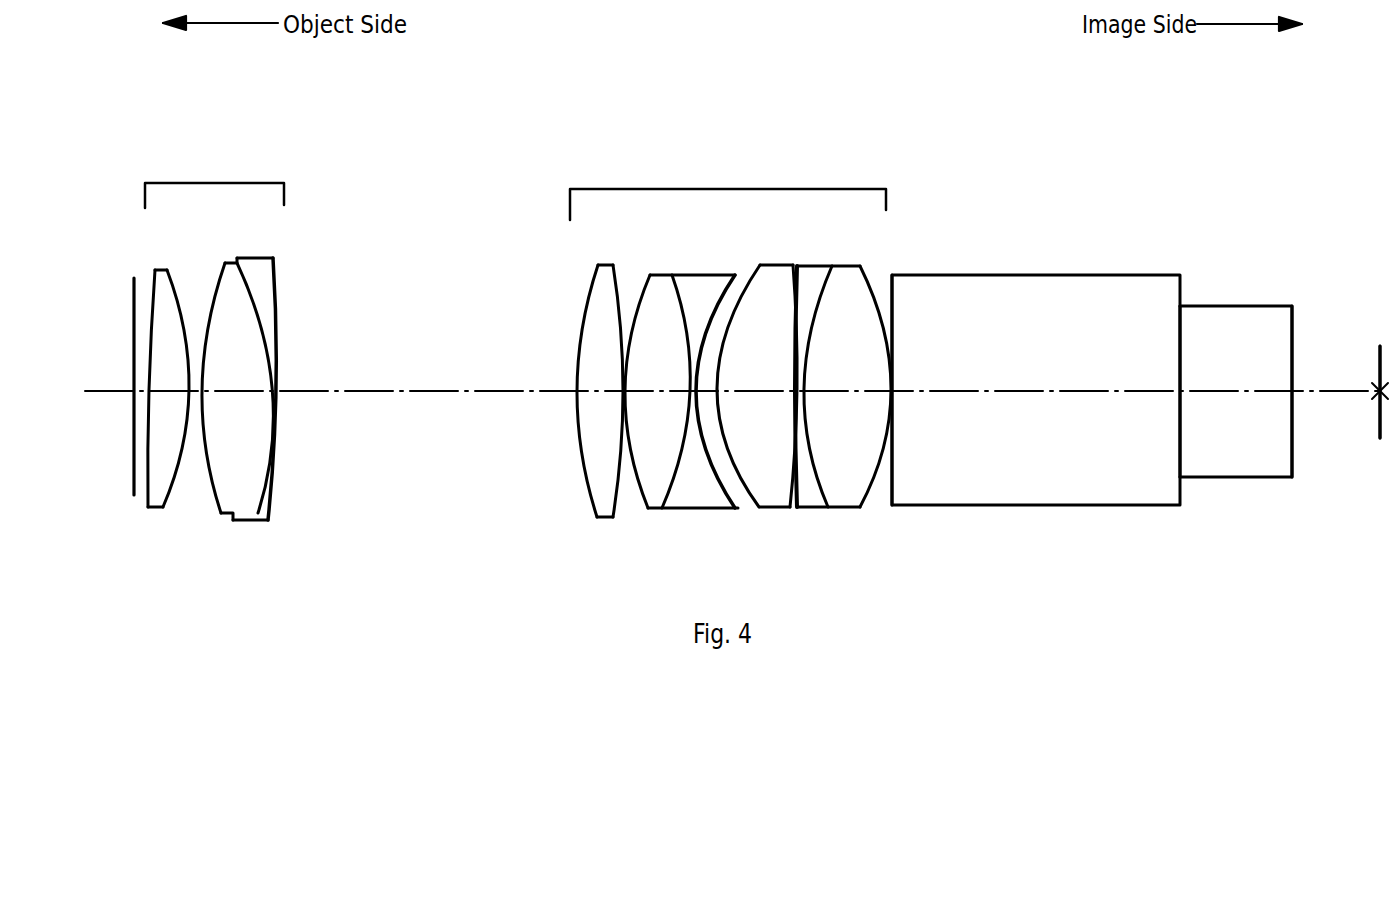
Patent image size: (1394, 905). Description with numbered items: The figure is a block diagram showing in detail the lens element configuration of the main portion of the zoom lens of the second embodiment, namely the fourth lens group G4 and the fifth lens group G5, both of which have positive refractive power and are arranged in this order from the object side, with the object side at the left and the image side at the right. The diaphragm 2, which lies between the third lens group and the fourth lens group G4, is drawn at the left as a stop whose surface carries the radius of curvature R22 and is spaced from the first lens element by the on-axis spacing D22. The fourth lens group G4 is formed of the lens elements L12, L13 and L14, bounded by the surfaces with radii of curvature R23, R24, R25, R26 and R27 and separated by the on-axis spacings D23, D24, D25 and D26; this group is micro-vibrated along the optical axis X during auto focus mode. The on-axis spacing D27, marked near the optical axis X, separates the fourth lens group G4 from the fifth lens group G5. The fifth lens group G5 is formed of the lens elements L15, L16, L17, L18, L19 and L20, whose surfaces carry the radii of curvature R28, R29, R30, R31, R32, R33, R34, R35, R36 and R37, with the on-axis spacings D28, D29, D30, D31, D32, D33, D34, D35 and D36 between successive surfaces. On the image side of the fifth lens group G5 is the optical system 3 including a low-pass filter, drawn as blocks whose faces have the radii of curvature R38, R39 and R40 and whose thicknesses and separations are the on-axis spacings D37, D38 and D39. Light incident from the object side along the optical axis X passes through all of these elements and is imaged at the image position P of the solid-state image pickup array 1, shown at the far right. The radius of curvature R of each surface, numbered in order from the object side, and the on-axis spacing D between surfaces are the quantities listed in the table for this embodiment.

The fourth lens group G4 is at (214, 179).
The fifth lens group G5 is at (728, 190).
The diaphragm 2 is at (106, 383).
The optical system 3 is at (1111, 396).
The solid-state image pickup array 1 is at (1378, 362).
The image position P is at (1376, 400).
The optical axis X is at (442, 393).
The lens element L12 is at (147, 394).
The lens element L13 is at (268, 395).
The lens element L14 is at (294, 413).
The lens element L15 is at (573, 398).
The lens element L16 is at (672, 387).
The lens element L17 is at (711, 402).
The lens element L18 is at (763, 387).
The lens element L19 is at (836, 387).
The lens element L20 is at (893, 395).
The radius of curvature R22 is at (132, 293).
The radius of curvature R23 is at (150, 292).
The radius of curvature R24 is at (172, 275).
The radius of curvature R25 is at (212, 280).
The radius of curvature R26 is at (247, 277).
The radius of curvature R27 is at (277, 310).
The radius of curvature R28 is at (585, 315).
The radius of curvature R29 is at (613, 267).
The radius of curvature R30 is at (638, 293).
The radius of curvature R31 is at (675, 275).
The radius of curvature R32 is at (720, 320).
The radius of curvature R33 is at (747, 273).
The radius of curvature R34 is at (773, 278).
The radius of curvature R35 is at (800, 283).
The radius of curvature R36 is at (823, 282).
The radius of curvature R37 is at (882, 288).
The radius of curvature R38 is at (884, 286).
The radius of curvature R39 is at (1182, 330).
The radius of curvature R40 is at (1292, 333).
The on-axis spacing D22 is at (158, 392).
The on-axis spacing D23 is at (180, 391).
The on-axis spacing D24 is at (190, 400).
The on-axis spacing D25 is at (220, 393).
The on-axis spacing D26 is at (277, 400).
The on-axis spacing D27 is at (363, 393).
The on-axis spacing D28 is at (602, 393).
The on-axis spacing D29 is at (608, 413).
The on-axis spacing D30 is at (643, 387).
The on-axis spacing D31 is at (683, 402).
The on-axis spacing D32 is at (708, 382).
The on-axis spacing D33 is at (752, 393).
The on-axis spacing D34 is at (807, 377).
The on-axis spacing D35 is at (808, 397).
The on-axis spacing D36 is at (851, 393).
The on-axis spacing D37 is at (893, 383).
The on-axis spacing D38 is at (1030, 393).
The on-axis spacing D39 is at (1225, 395).